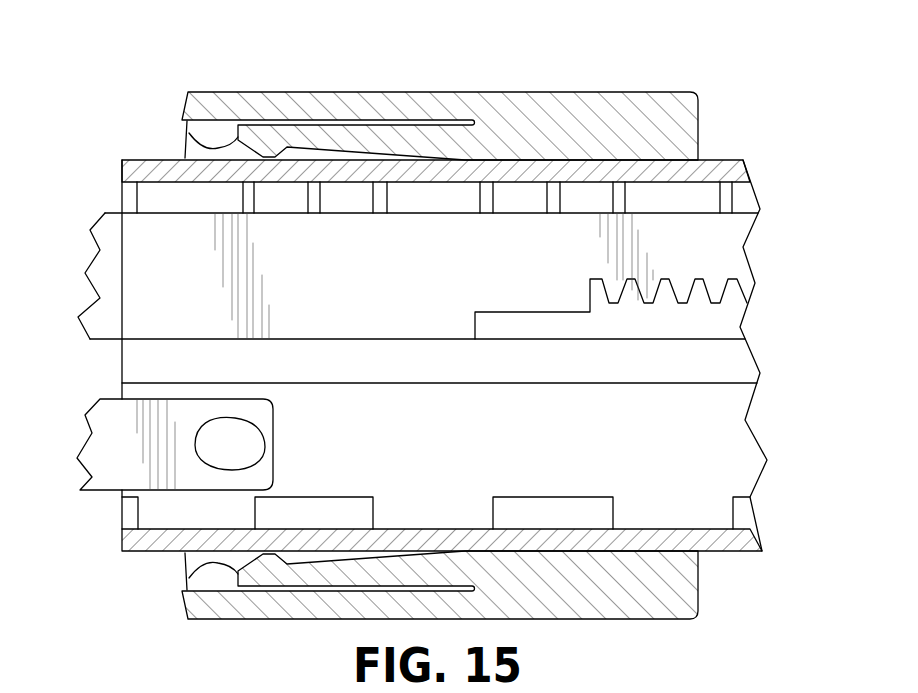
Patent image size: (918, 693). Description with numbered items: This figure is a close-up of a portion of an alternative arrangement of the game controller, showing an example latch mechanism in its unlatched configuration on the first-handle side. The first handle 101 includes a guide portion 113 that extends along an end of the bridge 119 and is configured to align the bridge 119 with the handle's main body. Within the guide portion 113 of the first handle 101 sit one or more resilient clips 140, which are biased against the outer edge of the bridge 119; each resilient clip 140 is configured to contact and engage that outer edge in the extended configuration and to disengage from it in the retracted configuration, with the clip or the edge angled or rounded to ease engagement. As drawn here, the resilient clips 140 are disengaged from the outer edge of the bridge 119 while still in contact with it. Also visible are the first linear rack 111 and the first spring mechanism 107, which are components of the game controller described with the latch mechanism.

The first handle 101 is at (296, 85).
The guide portion 113 is at (430, 92).
The bridge 119 is at (721, 159).
The first linear rack 111 is at (432, 287).
The first spring mechanism 107 is at (100, 490).
The resilient clip 140 is at (189, 138).